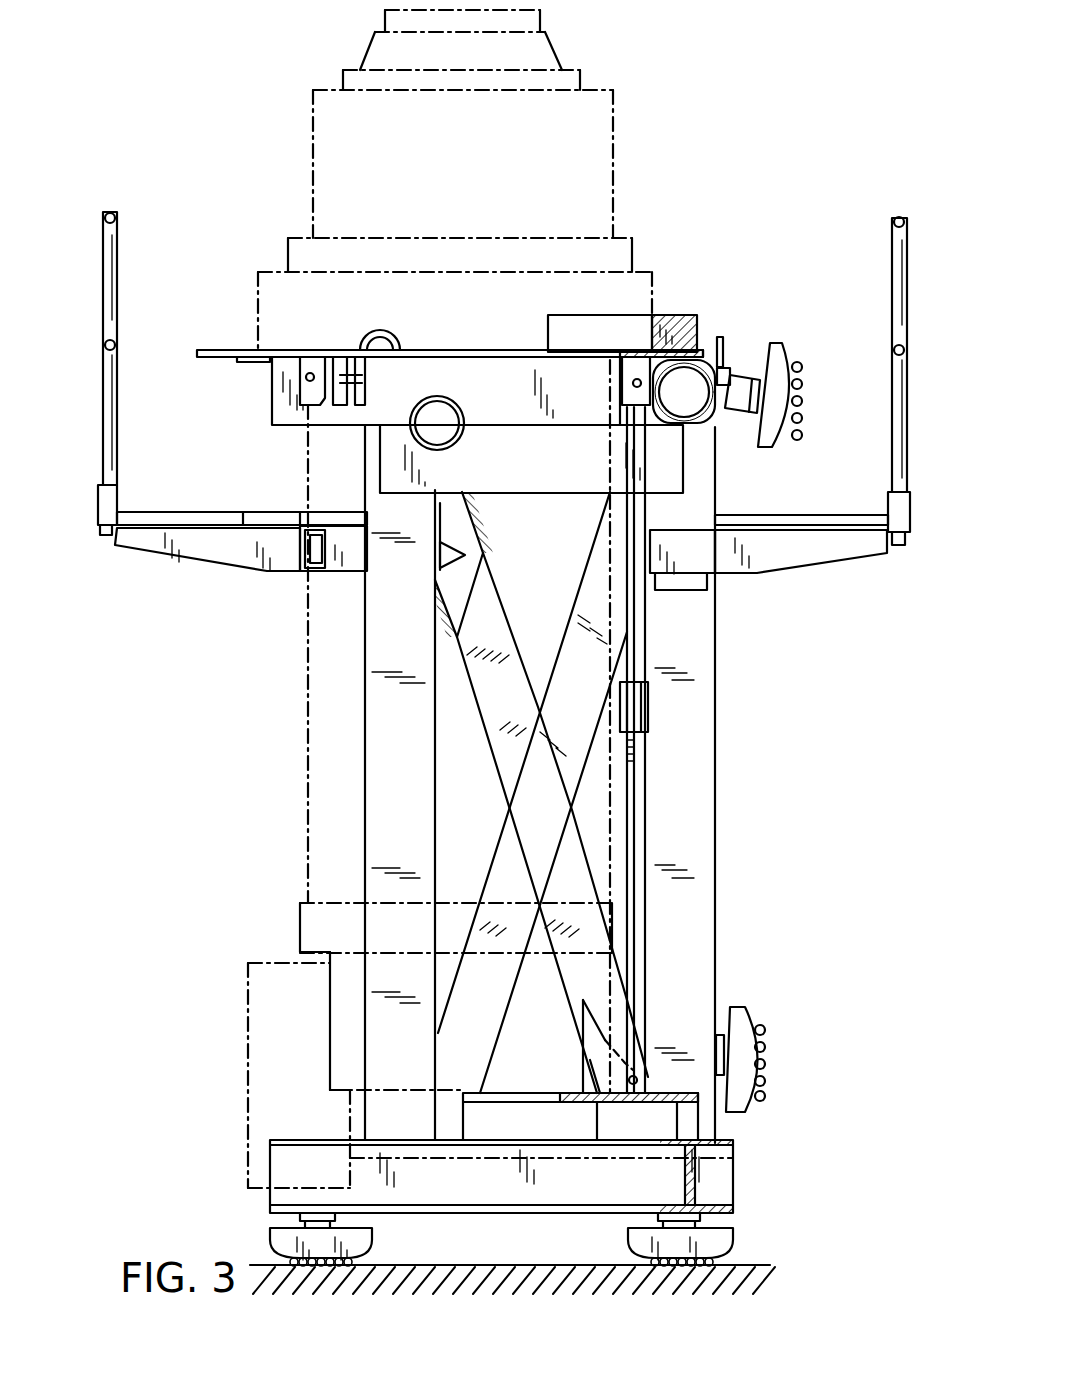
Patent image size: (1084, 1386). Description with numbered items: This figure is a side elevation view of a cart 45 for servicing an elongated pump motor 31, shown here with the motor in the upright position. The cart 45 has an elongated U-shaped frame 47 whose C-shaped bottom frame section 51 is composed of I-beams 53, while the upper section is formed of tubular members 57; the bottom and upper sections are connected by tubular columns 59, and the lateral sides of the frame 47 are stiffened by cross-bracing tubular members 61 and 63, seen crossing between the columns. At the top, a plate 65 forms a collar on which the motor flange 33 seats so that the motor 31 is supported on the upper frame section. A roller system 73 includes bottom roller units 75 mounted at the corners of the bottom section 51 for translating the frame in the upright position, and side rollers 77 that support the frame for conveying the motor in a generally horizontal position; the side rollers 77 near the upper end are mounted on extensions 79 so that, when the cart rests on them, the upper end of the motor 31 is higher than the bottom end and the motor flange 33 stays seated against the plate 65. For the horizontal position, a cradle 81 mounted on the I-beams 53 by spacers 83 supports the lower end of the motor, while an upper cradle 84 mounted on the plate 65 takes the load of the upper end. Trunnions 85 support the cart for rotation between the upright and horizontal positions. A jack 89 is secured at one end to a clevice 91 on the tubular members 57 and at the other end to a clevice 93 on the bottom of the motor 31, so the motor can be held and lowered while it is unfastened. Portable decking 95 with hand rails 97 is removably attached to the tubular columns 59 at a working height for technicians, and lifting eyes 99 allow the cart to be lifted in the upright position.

The pump motor 31 is at (636, 159).
The motor flange 33 is at (280, 308).
The cart 45 is at (823, 838).
The frame 47 is at (742, 907).
The bottom frame section 51 is at (724, 1170).
The I-beams 53 is at (730, 1142).
The tubular members 57 is at (468, 362).
The tubular columns 59 is at (378, 780).
The cross-bracing tubular member 61 is at (593, 570).
The cross-bracing tubular member 63 is at (498, 625).
The plate 65 is at (675, 335).
The roller system 73 is at (762, 1243).
The bottom roller units 75 is at (355, 1246).
The side rollers 77 is at (792, 398).
The extensions 79 is at (740, 420).
The cradle 81 is at (660, 1090).
The spacers 83 is at (680, 1130).
The upper cradle 84 is at (658, 318).
The trunnions 85 is at (440, 414).
The jacks 89 is at (645, 660).
The clevices 91 is at (365, 383).
The clevices 93 is at (622, 1028).
The portable decking 95 is at (137, 512).
The hand rails 97 is at (113, 320).
The lifting eyes 99 is at (398, 332).